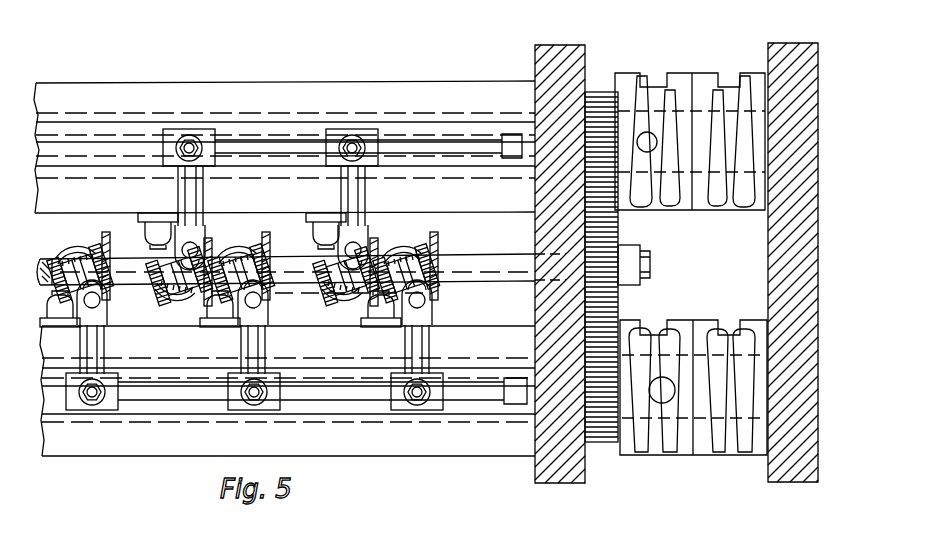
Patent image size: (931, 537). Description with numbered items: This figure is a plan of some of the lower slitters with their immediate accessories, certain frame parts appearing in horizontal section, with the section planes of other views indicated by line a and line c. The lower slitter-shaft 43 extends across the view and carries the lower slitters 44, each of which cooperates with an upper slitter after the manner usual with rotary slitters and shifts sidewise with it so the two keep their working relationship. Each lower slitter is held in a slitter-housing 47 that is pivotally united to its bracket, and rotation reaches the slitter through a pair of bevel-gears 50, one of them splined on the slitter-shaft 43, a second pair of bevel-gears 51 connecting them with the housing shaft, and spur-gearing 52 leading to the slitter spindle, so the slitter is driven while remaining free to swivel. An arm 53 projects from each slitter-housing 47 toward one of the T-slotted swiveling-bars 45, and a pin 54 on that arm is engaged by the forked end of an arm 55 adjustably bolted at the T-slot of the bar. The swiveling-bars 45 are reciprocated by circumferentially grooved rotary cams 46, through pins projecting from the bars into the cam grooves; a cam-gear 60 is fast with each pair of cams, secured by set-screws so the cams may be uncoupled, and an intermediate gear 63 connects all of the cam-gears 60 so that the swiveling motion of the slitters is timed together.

The lower slitter-shaft 43 is at (487, 267).
The lower slitters 44 is at (75, 262).
The swiveling-bars 45 is at (282, 130).
The circumferentially grooved rotary cams 46 is at (720, 88).
The slitter-housing 47 is at (397, 255).
The pair of bevel-gears 50 is at (438, 244).
The pair of bevel-gears 51 is at (268, 262).
The spur-gearing 52 is at (63, 264).
The arm 53 is at (433, 288).
The pins 54 is at (273, 300).
The arms 55 is at (330, 347).
The cam-gear 60 is at (596, 95).
The intermediate gear 63 is at (621, 239).
The line a is at (465, 125).
The line c is at (652, 263).